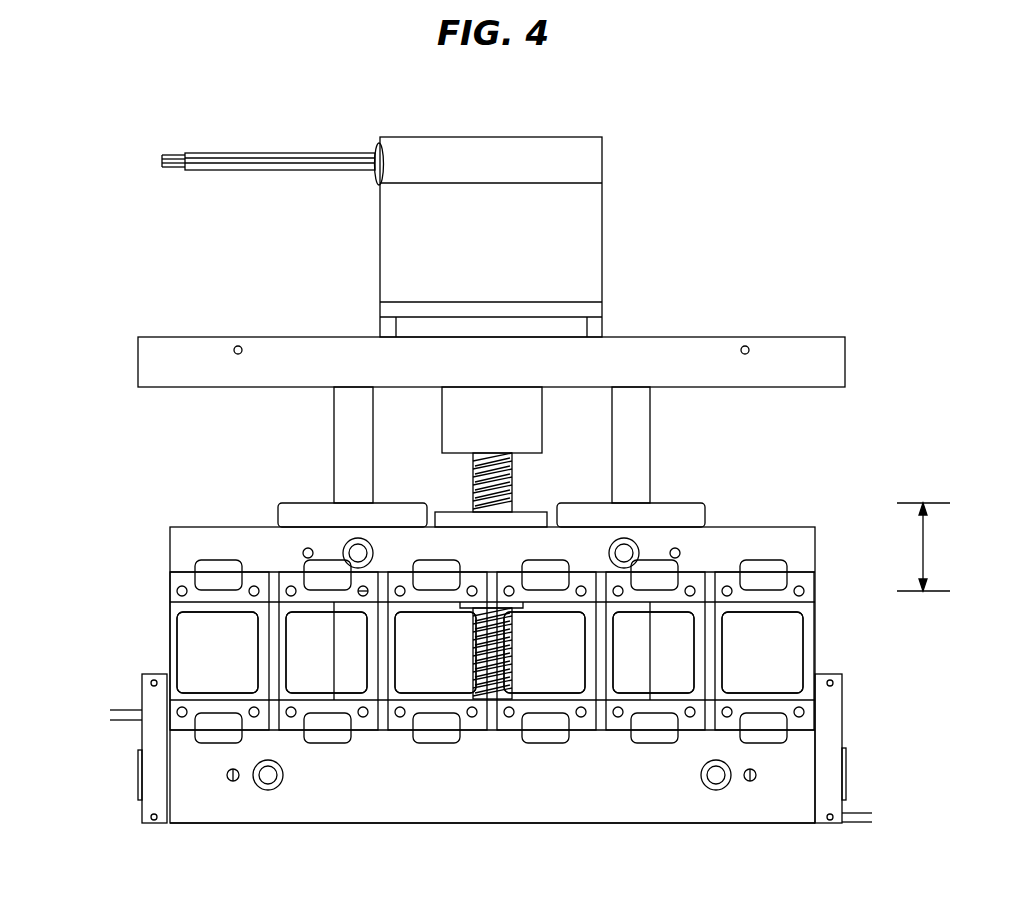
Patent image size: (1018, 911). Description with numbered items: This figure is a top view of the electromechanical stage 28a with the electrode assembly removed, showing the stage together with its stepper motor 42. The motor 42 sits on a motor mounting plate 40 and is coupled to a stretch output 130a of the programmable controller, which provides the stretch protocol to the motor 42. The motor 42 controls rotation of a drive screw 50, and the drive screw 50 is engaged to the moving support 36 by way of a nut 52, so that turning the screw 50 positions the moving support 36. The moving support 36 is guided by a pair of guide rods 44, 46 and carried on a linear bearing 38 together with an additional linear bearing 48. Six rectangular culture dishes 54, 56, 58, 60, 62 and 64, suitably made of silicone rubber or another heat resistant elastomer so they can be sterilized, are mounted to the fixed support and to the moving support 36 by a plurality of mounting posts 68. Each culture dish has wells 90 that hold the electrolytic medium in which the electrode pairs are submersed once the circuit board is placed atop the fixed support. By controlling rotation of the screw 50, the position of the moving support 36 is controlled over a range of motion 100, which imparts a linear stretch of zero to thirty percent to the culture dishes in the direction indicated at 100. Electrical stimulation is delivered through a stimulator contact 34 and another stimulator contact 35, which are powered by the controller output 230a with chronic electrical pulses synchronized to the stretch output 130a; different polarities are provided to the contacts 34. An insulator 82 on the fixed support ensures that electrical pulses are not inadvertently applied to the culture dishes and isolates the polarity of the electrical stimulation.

The stretch output 130a is at (233, 150).
The stepper motor 42 is at (602, 257).
The motor mounting plate 40 is at (166, 350).
The guide rod 44 is at (334, 449).
The guide rod 46 is at (650, 451).
The linear bearing 38 is at (278, 517).
The linear bearing 48 is at (705, 514).
The drive screw 50 is at (473, 493).
The nut 52 is at (531, 510).
The electromechanical stage 28a is at (128, 514).
The moving support 36 is at (815, 541).
The range of motion 100 is at (923, 551).
The mounting posts 68 is at (177, 591).
The culture dish 54 is at (205, 649).
The culture dish 56 is at (314, 649).
The culture dish 58 is at (423, 649).
The culture dish 60 is at (532, 649).
The culture dish 62 is at (641, 649).
The culture dish 64 is at (750, 649).
The well 90 is at (776, 680).
The output 230a is at (112, 715).
The stimulator contact 34 is at (142, 812).
The stimulator contact 35 is at (842, 721).
The insulator 82 is at (302, 814).